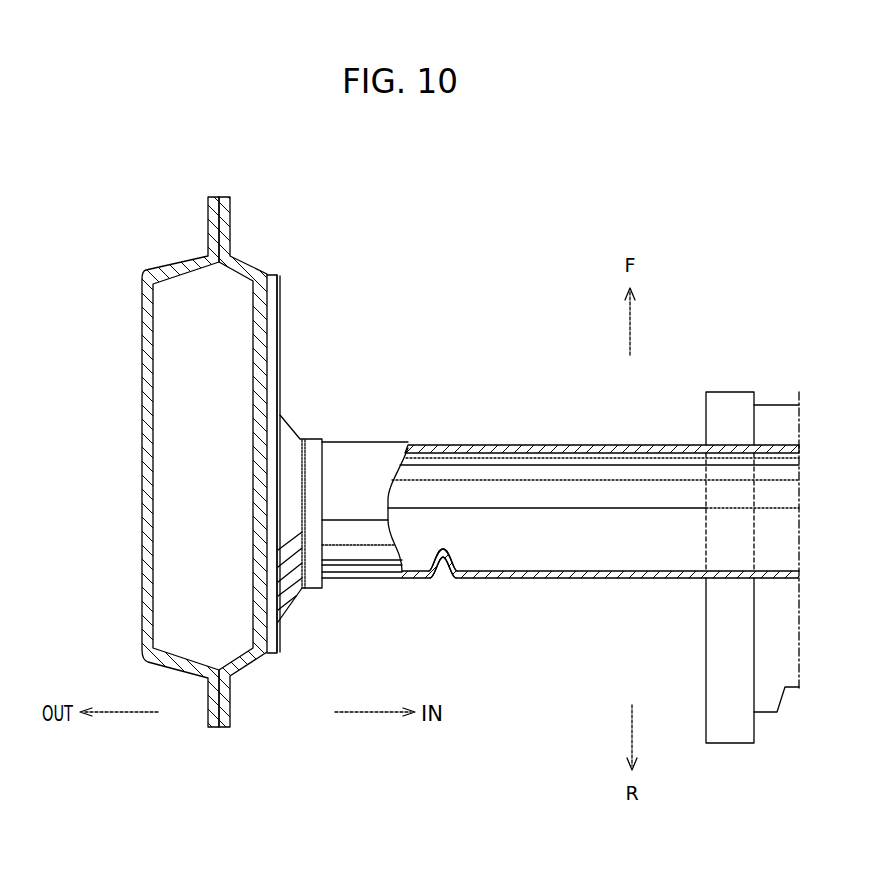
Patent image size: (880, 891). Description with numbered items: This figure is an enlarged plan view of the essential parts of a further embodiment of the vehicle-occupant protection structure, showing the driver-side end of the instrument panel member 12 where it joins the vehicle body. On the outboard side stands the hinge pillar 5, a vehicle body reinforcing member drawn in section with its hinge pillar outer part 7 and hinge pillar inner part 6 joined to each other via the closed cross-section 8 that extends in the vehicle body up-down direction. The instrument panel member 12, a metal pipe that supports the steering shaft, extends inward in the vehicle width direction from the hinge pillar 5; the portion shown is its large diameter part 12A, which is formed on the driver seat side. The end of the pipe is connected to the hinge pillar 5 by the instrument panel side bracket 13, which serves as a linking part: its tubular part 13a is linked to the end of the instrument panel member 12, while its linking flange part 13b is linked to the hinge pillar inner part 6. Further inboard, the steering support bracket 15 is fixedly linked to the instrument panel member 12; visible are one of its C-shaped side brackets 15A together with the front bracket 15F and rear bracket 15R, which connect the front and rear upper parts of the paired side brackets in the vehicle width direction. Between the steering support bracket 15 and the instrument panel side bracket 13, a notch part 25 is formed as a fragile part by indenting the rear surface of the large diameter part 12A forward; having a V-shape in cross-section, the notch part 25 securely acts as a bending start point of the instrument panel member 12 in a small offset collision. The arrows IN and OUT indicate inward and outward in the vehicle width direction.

The hinge pillar 5 is at (253, 239).
The hinge pillar outer part 7 is at (142, 322).
The closed cross-section 8 is at (198, 468).
The hinge pillar inner part 6 is at (276, 290).
The linking flange part 13b is at (281, 345).
The instrument panel side bracket 13 is at (289, 419).
The tubular part 13a is at (326, 468).
The instrument panel member 12 is at (591, 443).
The large diameter part 12A is at (505, 443).
The notch part 25 is at (442, 582).
The steering support bracket 15 is at (703, 645).
The side bracket 15A is at (720, 391).
The front bracket 15F is at (772, 415).
The rear bracket 15R is at (777, 690).